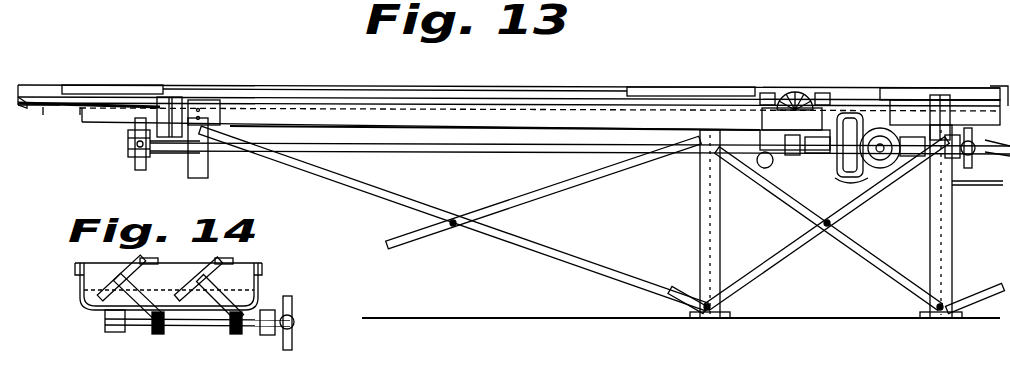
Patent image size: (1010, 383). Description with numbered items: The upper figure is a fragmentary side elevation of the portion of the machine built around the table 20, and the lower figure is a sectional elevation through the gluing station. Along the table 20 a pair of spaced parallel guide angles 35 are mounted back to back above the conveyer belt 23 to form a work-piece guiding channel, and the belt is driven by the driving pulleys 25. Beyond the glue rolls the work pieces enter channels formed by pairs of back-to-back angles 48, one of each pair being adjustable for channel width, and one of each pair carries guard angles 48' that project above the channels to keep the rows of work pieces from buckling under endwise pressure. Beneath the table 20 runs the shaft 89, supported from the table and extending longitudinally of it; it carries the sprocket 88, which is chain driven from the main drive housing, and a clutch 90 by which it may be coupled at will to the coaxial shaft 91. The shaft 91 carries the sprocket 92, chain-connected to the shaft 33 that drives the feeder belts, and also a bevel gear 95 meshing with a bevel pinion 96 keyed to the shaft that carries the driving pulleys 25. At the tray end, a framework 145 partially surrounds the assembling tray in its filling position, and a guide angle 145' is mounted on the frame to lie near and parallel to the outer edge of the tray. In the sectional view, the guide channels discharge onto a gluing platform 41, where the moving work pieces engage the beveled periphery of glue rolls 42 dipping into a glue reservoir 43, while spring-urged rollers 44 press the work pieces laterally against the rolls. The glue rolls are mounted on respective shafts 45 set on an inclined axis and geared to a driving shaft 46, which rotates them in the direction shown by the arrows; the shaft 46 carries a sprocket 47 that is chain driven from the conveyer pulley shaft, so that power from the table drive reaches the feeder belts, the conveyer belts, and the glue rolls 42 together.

In FIG. 13, the table 20 is at (368, 100).
In FIG. 13, the conveyer belt 23 is at (1000, 92).
In FIG. 13, the driving pulleys 25 is at (880, 176).
In FIG. 13, the shaft 33 is at (1004, 134).
In FIG. 13, the guide angles 35 is at (944, 92).
In FIG. 13, the glue rolls 42 is at (798, 100).
In FIG. 14, the glue rolls 42 is at (124, 268).
In FIG. 13, the shafts 45 is at (795, 129).
In FIG. 14, the shafts 45 is at (152, 330).
In FIG. 13, the angles 48 is at (395, 80).
In FIG. 13, the guard angles 48' is at (408, 82).
In FIG. 13, the sprocket 88 is at (140, 170).
In FIG. 13, the shaft 89 is at (462, 152).
In FIG. 13, the clutch 90 is at (846, 180).
In FIG. 13, the coaxial shaft 91 is at (930, 151).
In FIG. 13, the sprocket 92 is at (970, 170).
In FIG. 13, the bevel gear 95 is at (880, 13).
In FIG. 13, the bevel pinion 96 is at (880, 140).
In FIG. 13, the framework 145 is at (89, 124).
In FIG. 13, the guide angle 145' is at (17, 116).
In FIG. 14, the gluing platform 41 is at (80, 262).
In FIG. 14, the glue reservoir 43 is at (96, 298).
In FIG. 14, the spring-urged rollers 44 is at (232, 262).
In FIG. 14, the driving shaft 46 is at (190, 328).
In FIG. 14, the sprocket 47 is at (290, 312).